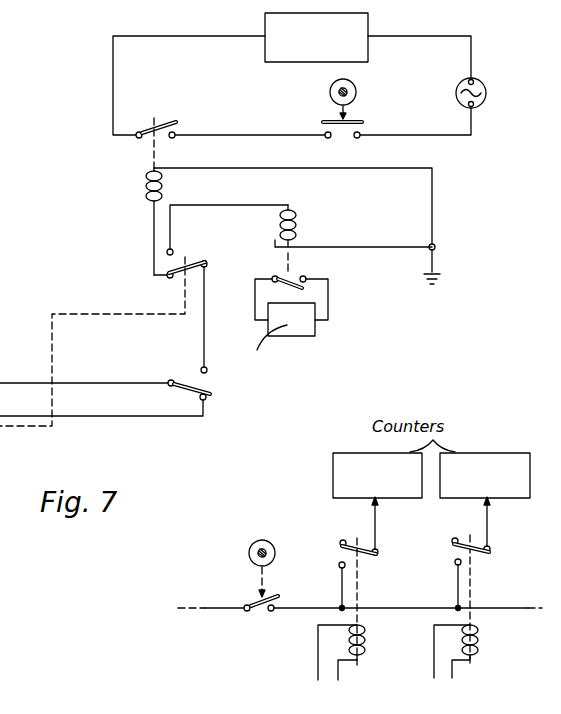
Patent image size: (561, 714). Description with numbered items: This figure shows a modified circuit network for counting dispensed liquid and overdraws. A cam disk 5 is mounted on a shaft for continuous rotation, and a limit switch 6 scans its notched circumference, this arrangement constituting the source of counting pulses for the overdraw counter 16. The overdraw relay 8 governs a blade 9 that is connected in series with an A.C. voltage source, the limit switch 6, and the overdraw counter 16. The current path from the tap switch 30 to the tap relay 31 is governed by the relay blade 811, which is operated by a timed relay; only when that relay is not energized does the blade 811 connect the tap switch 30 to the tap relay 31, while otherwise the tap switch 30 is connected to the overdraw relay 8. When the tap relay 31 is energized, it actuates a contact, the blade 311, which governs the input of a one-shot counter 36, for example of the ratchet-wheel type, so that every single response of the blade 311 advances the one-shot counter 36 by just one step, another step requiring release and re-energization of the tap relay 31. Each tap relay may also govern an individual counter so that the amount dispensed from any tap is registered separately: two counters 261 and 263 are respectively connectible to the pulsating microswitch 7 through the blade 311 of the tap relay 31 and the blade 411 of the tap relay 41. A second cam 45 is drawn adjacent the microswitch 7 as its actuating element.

The overdraw counter 16 is at (372, 22).
The blade 9 is at (170, 124).
The cam disk 5 is at (355, 86).
The limit switch 6 is at (356, 119).
The overdraw relay 8 is at (144, 197).
The tap relay 31 is at (296, 228).
The relay blade 811 is at (206, 270).
The tap switch 30 is at (186, 380).
The blade 311 is at (290, 276).
The one-shot counter 36 is at (316, 329).
The counter 261 is at (377, 475).
The counter 263 is at (485, 475).
The pulsating microswitch 7 is at (254, 613).
The cam 45 is at (285, 537).
The blade 411 is at (475, 553).
The tap relay 41 is at (478, 648).